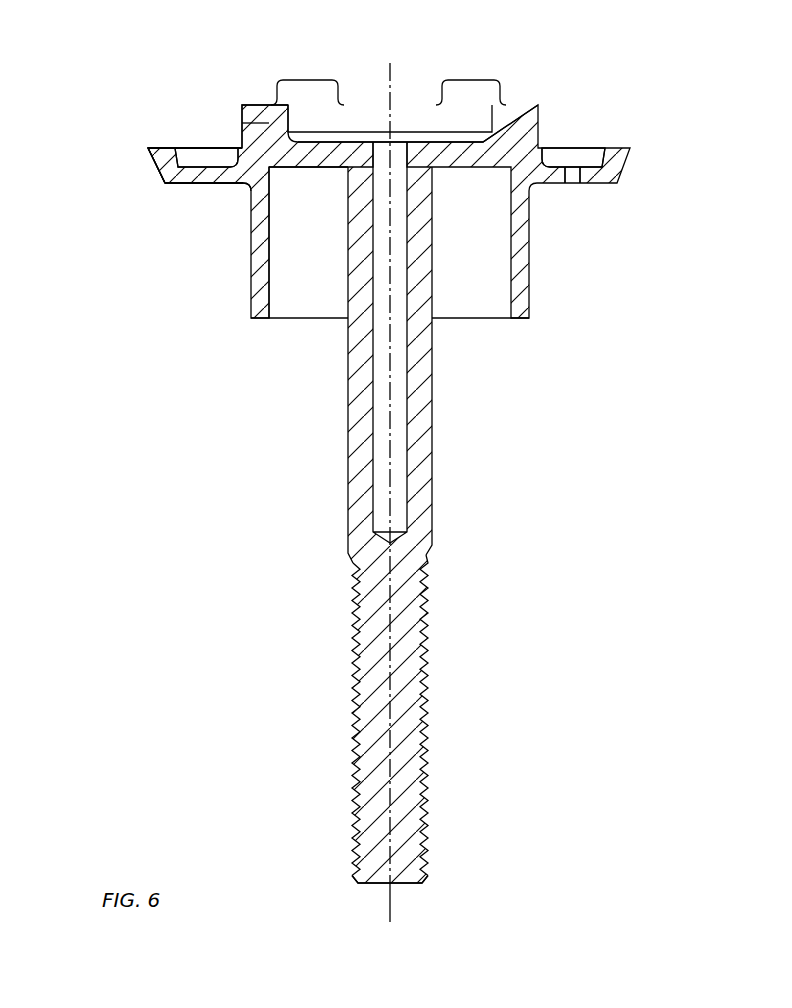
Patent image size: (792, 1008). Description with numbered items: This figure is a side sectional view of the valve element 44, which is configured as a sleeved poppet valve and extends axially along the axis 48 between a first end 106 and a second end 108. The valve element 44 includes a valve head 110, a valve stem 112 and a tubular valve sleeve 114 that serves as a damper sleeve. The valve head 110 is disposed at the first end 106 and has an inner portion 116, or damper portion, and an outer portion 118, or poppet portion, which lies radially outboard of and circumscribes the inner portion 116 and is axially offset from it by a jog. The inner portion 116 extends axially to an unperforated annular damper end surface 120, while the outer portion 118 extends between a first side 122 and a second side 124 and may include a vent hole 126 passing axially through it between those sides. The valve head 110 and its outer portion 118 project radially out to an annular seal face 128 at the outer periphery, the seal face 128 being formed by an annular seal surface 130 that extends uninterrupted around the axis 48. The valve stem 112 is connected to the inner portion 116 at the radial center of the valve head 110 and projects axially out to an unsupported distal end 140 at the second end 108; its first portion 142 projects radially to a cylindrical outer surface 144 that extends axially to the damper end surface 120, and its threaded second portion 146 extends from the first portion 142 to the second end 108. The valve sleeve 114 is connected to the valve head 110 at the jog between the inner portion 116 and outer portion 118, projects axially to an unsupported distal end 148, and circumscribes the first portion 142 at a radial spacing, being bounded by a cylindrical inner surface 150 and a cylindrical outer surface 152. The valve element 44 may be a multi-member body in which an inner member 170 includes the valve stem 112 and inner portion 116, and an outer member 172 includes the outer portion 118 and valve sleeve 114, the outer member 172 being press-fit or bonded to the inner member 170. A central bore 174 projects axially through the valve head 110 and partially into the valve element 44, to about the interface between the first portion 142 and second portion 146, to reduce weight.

The valve element 44 is at (686, 106).
The axis 48 is at (389, 913).
The first end 106 is at (490, 80).
The second end 108 is at (410, 885).
The distal end 140 is at (390, 880).
The valve head 110 is at (222, 122).
The valve stem 112 is at (338, 473).
The valve sleeve 114 is at (545, 273).
The inner portion 116 is at (335, 140).
The outer portion 118 is at (195, 192).
The damper end surface 120 is at (308, 168).
The first side 122 is at (180, 148).
The second side 124 is at (220, 187).
The vent hole 126 is at (572, 183).
The seal face 128 is at (157, 168).
The seal surface 130 is at (156, 165).
The first portion 142 is at (437, 430).
The outer surface 144 is at (348, 290).
The second portion 146 is at (433, 701).
The distal end 148 is at (520, 320).
The inner surface 150 is at (270, 290).
The outer surface 152 is at (250, 304).
The inner member 170 is at (415, 90).
The outer member 172 is at (591, 137).
The central bore 174 is at (400, 480).